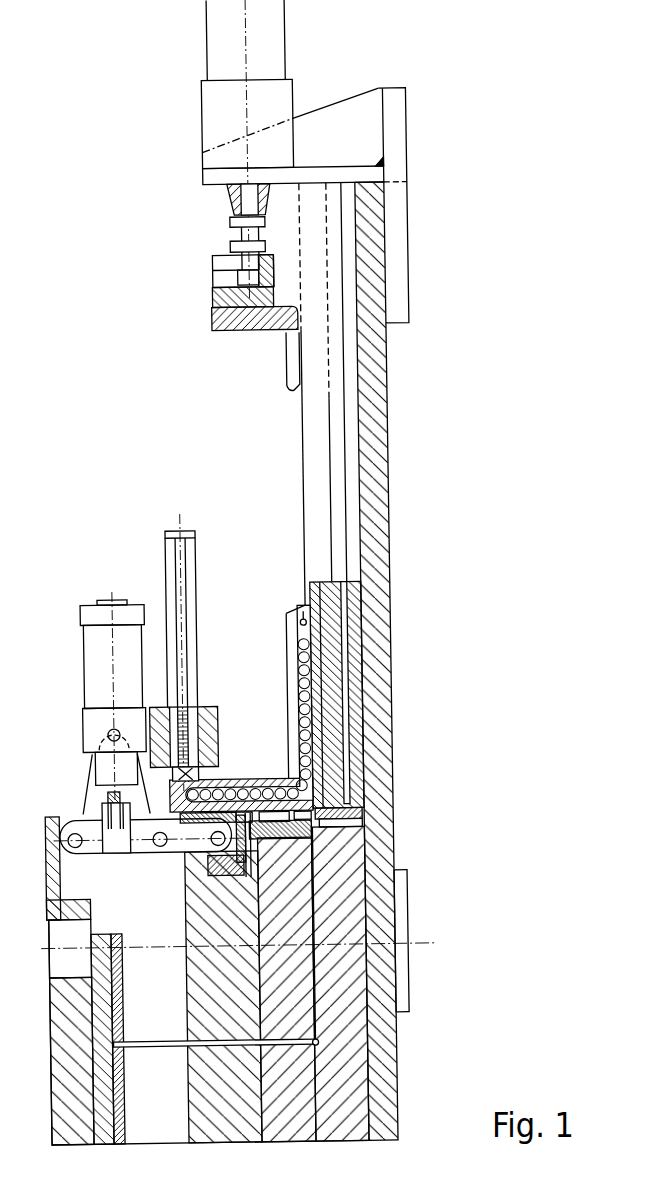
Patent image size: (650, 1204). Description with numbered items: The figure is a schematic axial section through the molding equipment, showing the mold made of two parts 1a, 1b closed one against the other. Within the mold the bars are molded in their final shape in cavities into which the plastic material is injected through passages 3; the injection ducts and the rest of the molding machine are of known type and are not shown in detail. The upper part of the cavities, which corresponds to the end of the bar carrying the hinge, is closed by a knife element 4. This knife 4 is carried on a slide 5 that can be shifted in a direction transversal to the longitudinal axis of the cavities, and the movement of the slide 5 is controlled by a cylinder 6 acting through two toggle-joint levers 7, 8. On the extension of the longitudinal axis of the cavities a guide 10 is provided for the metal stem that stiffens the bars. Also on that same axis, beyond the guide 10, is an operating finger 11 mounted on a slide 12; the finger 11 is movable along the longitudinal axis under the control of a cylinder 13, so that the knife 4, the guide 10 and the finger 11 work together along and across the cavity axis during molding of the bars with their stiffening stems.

The mold part 1a is at (346, 855).
The mold part 1b is at (336, 911).
The passage 3 is at (149, 1040).
The knife element 4 is at (276, 839).
The slide 5 is at (211, 863).
The cylinder 6 is at (99, 668).
The toggle-joint lever 7 is at (176, 853).
The toggle-joint lever 8 is at (88, 845).
The guide 10 is at (311, 699).
The operating finger 11 is at (293, 365).
The slide 12 is at (229, 321).
The cylinder 13 is at (228, 32).